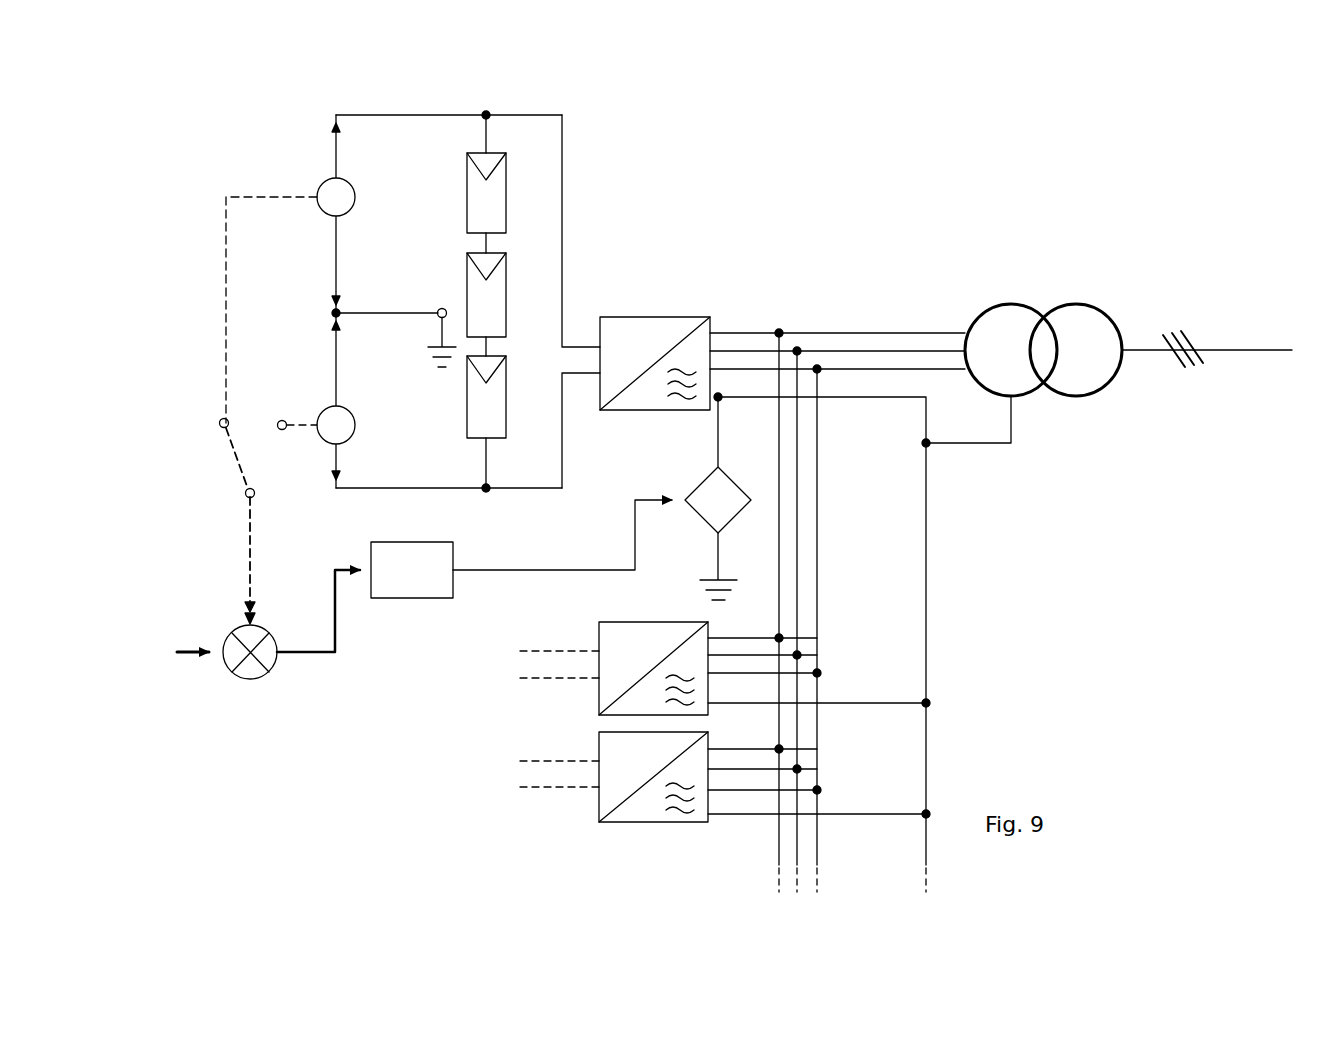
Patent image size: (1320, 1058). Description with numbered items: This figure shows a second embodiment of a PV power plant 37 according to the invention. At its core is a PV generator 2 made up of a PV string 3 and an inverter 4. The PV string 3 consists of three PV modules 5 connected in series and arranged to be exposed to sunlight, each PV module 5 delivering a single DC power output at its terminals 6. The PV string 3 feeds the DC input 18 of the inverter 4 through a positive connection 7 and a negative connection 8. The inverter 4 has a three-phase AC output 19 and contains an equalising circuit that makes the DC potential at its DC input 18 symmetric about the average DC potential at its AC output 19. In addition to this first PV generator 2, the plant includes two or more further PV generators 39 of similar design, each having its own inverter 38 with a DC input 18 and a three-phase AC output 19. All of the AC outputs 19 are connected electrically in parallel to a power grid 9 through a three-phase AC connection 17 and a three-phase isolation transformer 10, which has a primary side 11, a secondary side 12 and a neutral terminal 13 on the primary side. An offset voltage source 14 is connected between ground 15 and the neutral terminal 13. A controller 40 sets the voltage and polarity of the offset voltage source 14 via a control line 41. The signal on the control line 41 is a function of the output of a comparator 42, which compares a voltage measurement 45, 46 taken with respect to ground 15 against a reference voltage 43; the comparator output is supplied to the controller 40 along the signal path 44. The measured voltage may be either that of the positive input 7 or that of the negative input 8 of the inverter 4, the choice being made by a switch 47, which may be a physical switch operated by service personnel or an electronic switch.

The PV generator 2 is at (703, 228).
The PV string 3 is at (420, 90).
The inverter 4 is at (685, 317).
The PV module 5 is at (467, 183).
The terminals 6 is at (488, 130).
The positive connection 7 is at (564, 315).
The negative connection 8 is at (564, 408).
The power grid 9 is at (1250, 350).
The three-phase isolation transformer 10 is at (1120, 282).
The primary side 11 is at (1020, 304).
The secondary side 12 is at (1080, 304).
The neutral terminal 13 is at (1013, 420).
The offset voltage source 14 is at (743, 486).
The ground 15 is at (437, 331).
The three-phase AC connection 17 is at (848, 333).
The DC input 18 is at (592, 340).
The three-phase AC output 19 is at (713, 356).
The PV power plant 37 is at (214, 836).
The inverter 38 is at (600, 712).
The PV generator 39 is at (465, 653).
The controller 40 is at (396, 572).
The control line 41 is at (495, 570).
The comparator 42 is at (255, 677).
The reference voltage 43 is at (195, 650).
The measured value signal 44 is at (252, 573).
The voltage measurement 45 is at (325, 180).
The voltage measurement 46 is at (325, 407).
The switch 47 is at (245, 495).